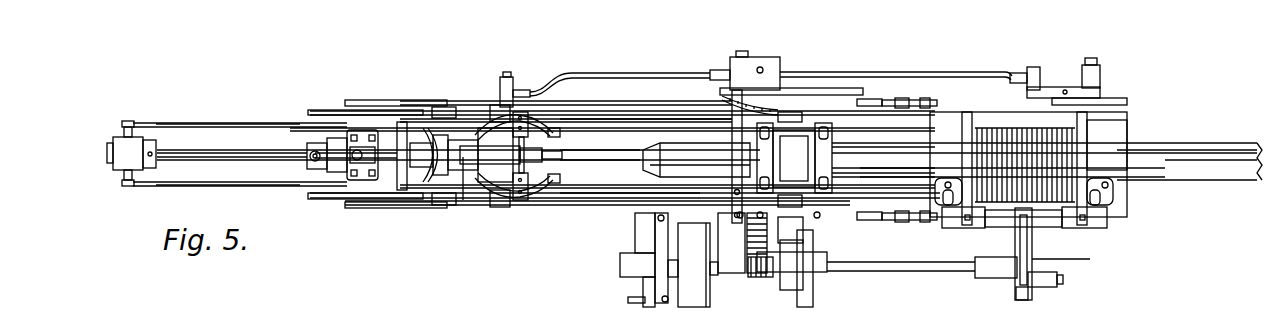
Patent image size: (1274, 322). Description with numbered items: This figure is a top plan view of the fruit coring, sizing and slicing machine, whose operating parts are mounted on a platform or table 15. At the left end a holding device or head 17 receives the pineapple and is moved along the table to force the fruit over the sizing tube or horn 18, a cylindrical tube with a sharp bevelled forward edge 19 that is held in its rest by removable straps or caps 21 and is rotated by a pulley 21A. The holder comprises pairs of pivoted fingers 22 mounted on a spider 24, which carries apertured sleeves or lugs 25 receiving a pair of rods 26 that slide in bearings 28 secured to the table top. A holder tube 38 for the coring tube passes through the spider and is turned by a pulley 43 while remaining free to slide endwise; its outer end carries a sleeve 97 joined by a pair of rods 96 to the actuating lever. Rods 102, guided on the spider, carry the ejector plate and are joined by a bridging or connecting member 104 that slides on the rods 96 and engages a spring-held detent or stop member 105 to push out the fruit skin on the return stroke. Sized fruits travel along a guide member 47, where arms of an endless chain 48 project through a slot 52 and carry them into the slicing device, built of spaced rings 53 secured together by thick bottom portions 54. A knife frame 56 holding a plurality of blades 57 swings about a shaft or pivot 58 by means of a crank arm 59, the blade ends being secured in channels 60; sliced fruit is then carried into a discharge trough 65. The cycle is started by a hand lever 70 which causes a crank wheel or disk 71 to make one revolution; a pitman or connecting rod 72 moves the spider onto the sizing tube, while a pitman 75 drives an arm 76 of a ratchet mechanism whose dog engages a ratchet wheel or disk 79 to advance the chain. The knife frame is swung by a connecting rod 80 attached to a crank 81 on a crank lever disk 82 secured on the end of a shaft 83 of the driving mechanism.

The platform or table 15 is at (587, 210).
The holding device or head 17 is at (600, 143).
The sizing tube or horn 18 is at (696, 160).
The bevelled forward edge 19 is at (601, 148).
The removable straps or caps 21 is at (757, 152).
The pulley 21A is at (854, 158).
The pivoted fingers 22 is at (553, 132).
The spider 24 is at (517, 115).
The apertured sleeves or lugs 25 is at (490, 105).
The rods 26 is at (613, 119).
The bearings 28 is at (440, 110).
The holder tube 38 is at (257, 150).
The pulley 43 is at (330, 167).
The guide member 47 is at (942, 143).
The endless chain 48 is at (1012, 166).
The slot 52 is at (913, 165).
The spaced rings 53 is at (1017, 150).
The bottom portions 54 is at (1023, 213).
The frame 56 is at (1087, 137).
The blades 57 is at (1043, 200).
The shaft or pivot 58 is at (997, 218).
The crank arm 59 is at (1090, 259).
The channels 60 is at (1028, 167).
The discharge trough 65 is at (1189, 161).
The hand lever 70 is at (470, 107).
The crank wheel or disk 71 is at (783, 90).
The pitman or connecting rod 72 is at (660, 76).
The pitman 75 is at (938, 72).
The arm 76 is at (1047, 87).
The ratchet wheel or disk 79 is at (1113, 100).
The connecting rod 80 is at (1043, 283).
The crank 81 is at (1063, 282).
The crank lever disk 82 is at (1022, 300).
The shaft 83 is at (932, 270).
The rods 96 is at (200, 182).
The sleeve 97 is at (130, 167).
The rods 102 is at (463, 200).
The bridging or connecting member 104 is at (401, 190).
The detent or stop member 105 is at (333, 143).